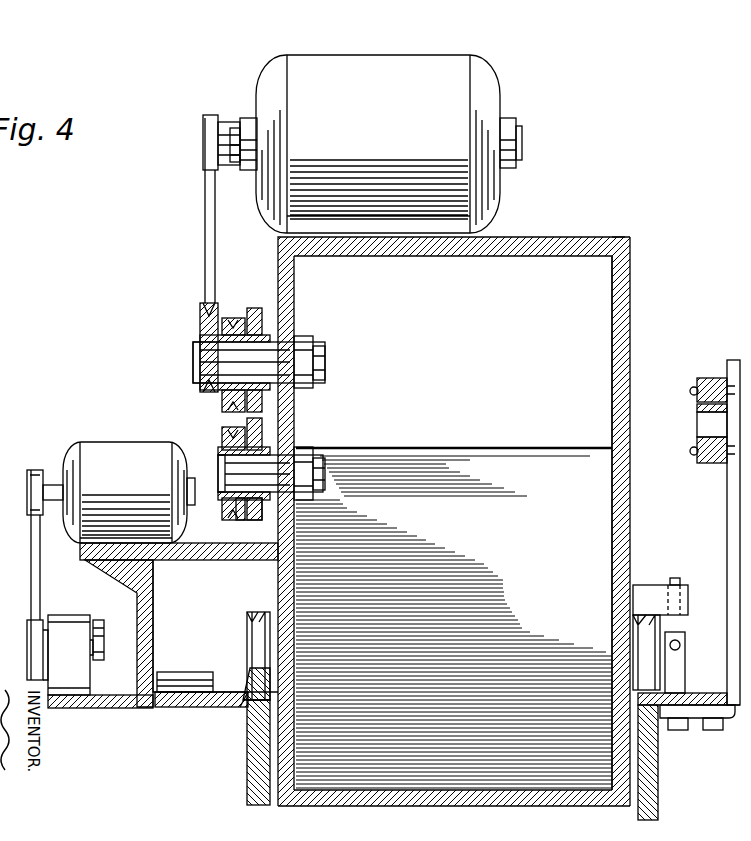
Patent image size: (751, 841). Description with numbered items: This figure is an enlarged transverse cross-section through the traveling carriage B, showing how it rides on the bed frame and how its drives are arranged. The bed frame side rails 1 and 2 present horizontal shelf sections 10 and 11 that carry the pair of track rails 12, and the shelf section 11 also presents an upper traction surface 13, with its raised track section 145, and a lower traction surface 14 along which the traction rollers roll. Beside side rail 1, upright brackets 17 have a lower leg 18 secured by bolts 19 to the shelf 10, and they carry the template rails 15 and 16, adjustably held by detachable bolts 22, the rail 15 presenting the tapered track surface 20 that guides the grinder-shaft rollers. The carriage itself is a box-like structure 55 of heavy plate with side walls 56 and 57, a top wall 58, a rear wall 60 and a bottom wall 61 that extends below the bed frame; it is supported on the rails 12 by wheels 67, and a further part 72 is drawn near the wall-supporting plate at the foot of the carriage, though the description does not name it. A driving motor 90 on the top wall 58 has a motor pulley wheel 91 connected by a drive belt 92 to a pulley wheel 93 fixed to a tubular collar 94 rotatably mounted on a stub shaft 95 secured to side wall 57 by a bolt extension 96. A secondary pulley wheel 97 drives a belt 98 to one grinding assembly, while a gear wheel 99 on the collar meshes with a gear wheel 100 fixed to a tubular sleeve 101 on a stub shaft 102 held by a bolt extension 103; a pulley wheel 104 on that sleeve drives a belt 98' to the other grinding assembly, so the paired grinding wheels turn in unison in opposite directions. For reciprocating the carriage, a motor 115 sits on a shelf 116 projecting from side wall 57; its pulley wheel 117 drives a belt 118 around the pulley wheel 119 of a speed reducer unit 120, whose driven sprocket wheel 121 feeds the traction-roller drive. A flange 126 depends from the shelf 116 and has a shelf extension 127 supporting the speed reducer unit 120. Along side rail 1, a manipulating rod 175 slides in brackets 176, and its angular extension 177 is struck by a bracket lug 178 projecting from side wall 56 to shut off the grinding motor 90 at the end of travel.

The side rail 1 is at (660, 786).
The side rail 2 is at (238, 798).
The shelf section 10 is at (740, 706).
The shelf section 11 is at (244, 700).
The rails 12 is at (255, 690).
The upper traction surface 13 is at (190, 688).
The lower traction surface 14 is at (168, 708).
The template rail 15 is at (712, 378).
The template rail 16 is at (710, 463).
The upright bracket 17 is at (728, 518).
The lower leg 18 is at (682, 730).
The bolts 19 is at (711, 730).
The track surface 20 is at (704, 378).
The detachable bolts 22 is at (692, 387).
The box-like structure 55 is at (451, 511).
The side wall 56 is at (625, 300).
The side wall 57 is at (282, 262).
The top wall 58 is at (548, 262).
The rear wall 60 is at (560, 447).
The bottom wall 61 is at (530, 806).
The wheels 67 is at (250, 622).
The plate 72 is at (637, 690).
The driving motor 90 is at (376, 144).
The motor pulley wheel 91 is at (203, 120).
The drive belt 92 is at (205, 210).
The pulley wheel 93 is at (200, 308).
The tubular collar 94 is at (200, 338).
The stub shaft 95 is at (205, 360).
The bolt extension 96 is at (300, 356).
The secondary pulley wheel 97 is at (232, 325).
The belt 98 is at (209, 405).
The belt 98' is at (246, 519).
The gear wheel 99 is at (256, 318).
The gear wheel 100 is at (262, 432).
The tubular sleeve 101 is at (298, 468).
The stub shaft 102 is at (230, 472).
The bolt extension 103 is at (322, 472).
The pulley wheel 104 is at (225, 436).
The motor 115 is at (122, 442).
The shelf 116 is at (220, 560).
The pulley wheel 117 is at (30, 472).
The belt 118 is at (40, 557).
The pulley wheel 119 is at (40, 624).
The speed reducer unit 120 is at (66, 655).
The driven sprocket wheel 121 is at (100, 660).
The flange 126 is at (150, 610).
The shelf extension 127 is at (100, 708).
The raised track section 145 is at (175, 675).
The manipulating rod 175 is at (682, 646).
The brackets 176 is at (688, 672).
The angular extension 177 is at (682, 580).
The bracket lug 178 is at (655, 585).
The traveling carriage B is at (621, 227).